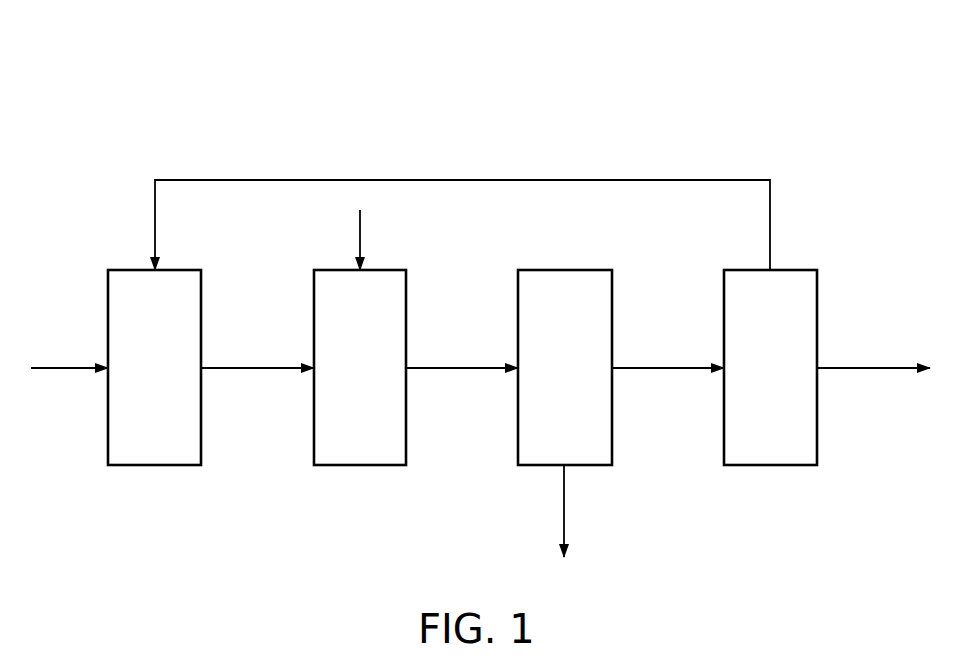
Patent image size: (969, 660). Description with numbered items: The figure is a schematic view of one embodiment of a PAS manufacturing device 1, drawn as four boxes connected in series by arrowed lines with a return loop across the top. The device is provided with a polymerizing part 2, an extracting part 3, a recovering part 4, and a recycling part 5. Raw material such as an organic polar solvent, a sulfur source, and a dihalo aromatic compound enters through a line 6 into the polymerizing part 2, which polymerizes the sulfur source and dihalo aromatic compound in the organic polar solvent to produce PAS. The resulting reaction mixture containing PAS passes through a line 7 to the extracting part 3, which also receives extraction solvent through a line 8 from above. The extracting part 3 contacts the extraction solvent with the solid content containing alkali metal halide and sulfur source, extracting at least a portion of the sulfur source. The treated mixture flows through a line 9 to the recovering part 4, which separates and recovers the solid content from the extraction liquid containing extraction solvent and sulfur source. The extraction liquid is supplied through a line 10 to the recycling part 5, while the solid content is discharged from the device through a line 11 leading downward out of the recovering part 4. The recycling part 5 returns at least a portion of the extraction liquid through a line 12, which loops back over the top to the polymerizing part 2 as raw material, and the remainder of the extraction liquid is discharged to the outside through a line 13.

The PAS manufacturing device 1 is at (103, 120).
The polymerizing part 2 is at (201, 297).
The extracting part 3 is at (406, 297).
The recovering part 4 is at (612, 297).
The recycling part 5 is at (817, 297).
The line 6 is at (64, 368).
The line 7 is at (257, 368).
The line 8 is at (361, 218).
The line 9 is at (462, 368).
The line 10 is at (668, 368).
The line 11 is at (565, 504).
The line 12 is at (549, 179).
The line 13 is at (873, 368).